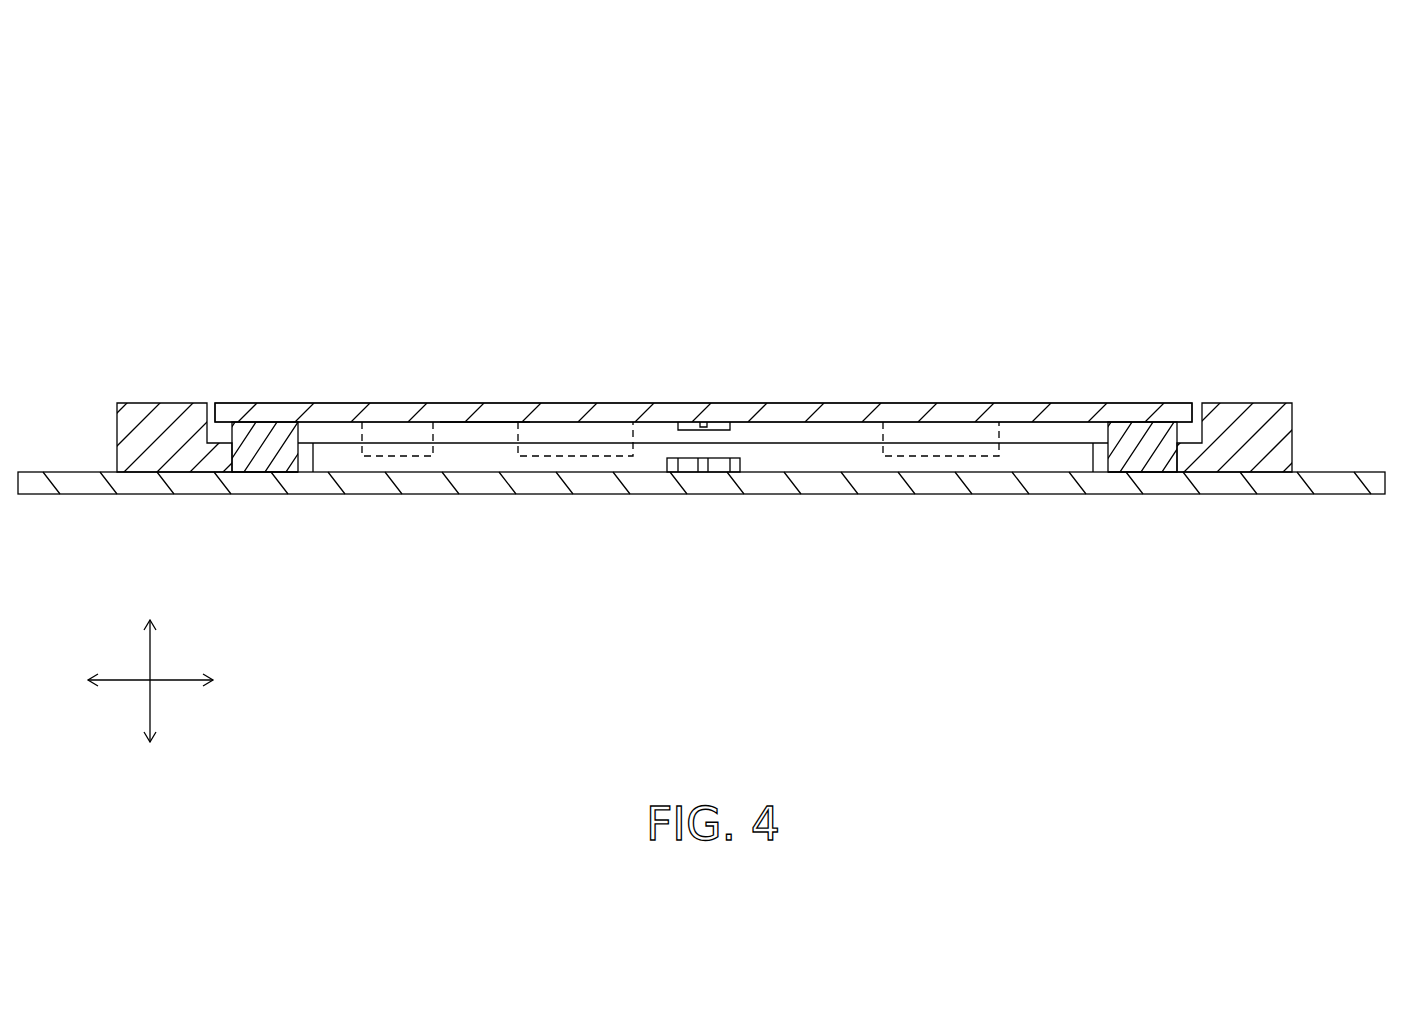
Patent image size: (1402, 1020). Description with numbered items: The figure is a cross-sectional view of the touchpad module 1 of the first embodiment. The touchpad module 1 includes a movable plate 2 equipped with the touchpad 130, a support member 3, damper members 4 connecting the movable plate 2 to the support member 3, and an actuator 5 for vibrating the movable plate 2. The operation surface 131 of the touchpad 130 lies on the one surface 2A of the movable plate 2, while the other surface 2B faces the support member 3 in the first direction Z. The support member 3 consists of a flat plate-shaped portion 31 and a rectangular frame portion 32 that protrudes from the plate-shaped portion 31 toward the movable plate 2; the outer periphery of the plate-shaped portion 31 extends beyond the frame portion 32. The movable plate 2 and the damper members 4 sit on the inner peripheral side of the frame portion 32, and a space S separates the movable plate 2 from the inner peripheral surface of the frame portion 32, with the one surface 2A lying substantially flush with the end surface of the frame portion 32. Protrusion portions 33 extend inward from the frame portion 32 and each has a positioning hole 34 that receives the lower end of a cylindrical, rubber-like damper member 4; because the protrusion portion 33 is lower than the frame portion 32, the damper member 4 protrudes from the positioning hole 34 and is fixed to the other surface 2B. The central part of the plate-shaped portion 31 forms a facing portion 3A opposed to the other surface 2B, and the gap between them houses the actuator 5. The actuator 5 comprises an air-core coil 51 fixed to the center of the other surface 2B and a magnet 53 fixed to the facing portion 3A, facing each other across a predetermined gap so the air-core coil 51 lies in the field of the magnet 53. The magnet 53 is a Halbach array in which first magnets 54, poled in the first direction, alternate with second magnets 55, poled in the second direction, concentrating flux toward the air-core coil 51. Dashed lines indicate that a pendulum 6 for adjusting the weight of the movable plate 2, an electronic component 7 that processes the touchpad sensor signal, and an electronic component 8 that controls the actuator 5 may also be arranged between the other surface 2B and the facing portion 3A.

The touchpad module 1 is at (148, 179).
The support member 3 is at (143, 334).
The plate-shaped portion 31 is at (62, 470).
The frame portion 32 is at (146, 410).
The protrusion portion 33 is at (314, 452).
The positioning hole 34 is at (296, 473).
The facing portion 3A is at (483, 465).
The damper member 4 is at (300, 443).
The space S is at (213, 401).
The operation surface 131 is at (400, 402).
The one surface 2A is at (703, 412).
The touchpad 130 is at (1020, 403).
The movable plate 2 is at (703, 412).
The other surface 2B is at (475, 421).
The electronic component 8 is at (437, 437).
The pendulum 6 is at (643, 428).
The electronic component 7 is at (883, 437).
The actuator 5 is at (832, 319).
The air-core coil 51 is at (733, 426).
The magnet 53 is at (741, 463).
The first magnet 54 is at (688, 474).
The second magnet 55 is at (672, 474).